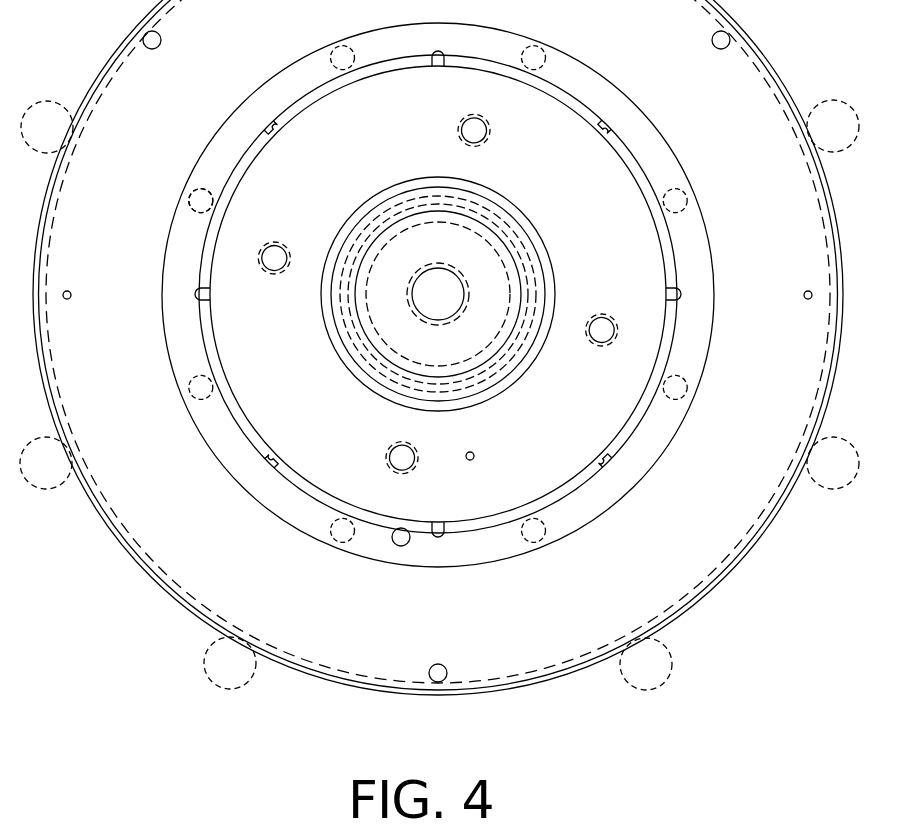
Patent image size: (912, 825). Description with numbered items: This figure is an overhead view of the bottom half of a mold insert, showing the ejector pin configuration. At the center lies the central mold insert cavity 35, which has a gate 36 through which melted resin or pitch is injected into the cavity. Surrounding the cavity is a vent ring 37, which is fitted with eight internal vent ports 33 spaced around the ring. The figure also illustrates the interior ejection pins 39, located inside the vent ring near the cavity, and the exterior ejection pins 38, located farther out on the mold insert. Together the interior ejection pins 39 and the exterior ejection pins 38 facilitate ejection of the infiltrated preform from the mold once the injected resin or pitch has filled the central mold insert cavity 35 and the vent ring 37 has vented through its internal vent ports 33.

The internal vent port 33 is at (675, 292).
The central mold insert cavity 35 is at (613, 413).
The gate 36 is at (384, 322).
The vent ring 37 is at (653, 147).
The exterior ejection pin 38 is at (190, 204).
The interior ejection pin 39 is at (390, 456).